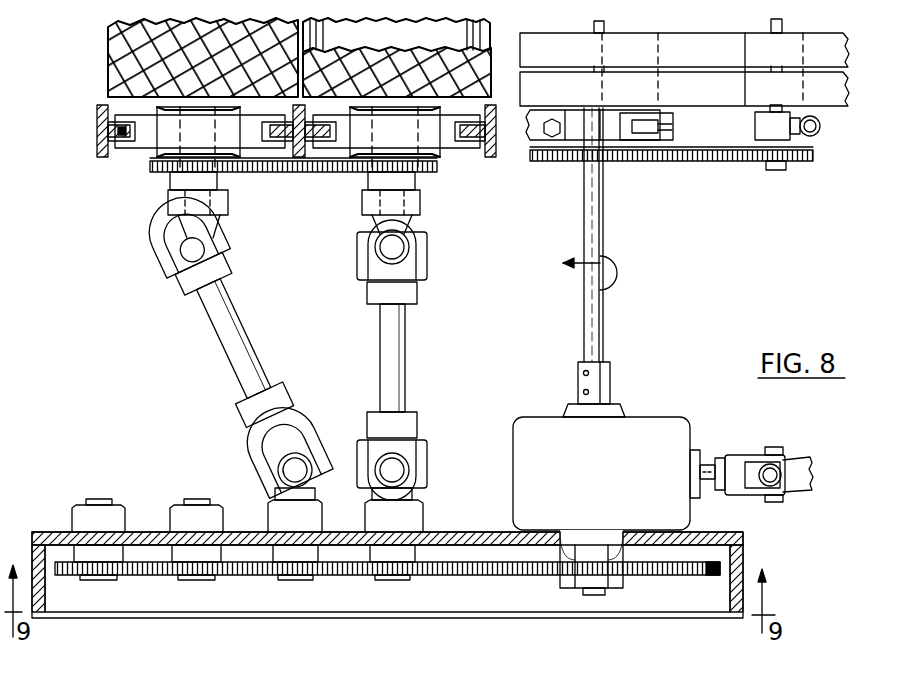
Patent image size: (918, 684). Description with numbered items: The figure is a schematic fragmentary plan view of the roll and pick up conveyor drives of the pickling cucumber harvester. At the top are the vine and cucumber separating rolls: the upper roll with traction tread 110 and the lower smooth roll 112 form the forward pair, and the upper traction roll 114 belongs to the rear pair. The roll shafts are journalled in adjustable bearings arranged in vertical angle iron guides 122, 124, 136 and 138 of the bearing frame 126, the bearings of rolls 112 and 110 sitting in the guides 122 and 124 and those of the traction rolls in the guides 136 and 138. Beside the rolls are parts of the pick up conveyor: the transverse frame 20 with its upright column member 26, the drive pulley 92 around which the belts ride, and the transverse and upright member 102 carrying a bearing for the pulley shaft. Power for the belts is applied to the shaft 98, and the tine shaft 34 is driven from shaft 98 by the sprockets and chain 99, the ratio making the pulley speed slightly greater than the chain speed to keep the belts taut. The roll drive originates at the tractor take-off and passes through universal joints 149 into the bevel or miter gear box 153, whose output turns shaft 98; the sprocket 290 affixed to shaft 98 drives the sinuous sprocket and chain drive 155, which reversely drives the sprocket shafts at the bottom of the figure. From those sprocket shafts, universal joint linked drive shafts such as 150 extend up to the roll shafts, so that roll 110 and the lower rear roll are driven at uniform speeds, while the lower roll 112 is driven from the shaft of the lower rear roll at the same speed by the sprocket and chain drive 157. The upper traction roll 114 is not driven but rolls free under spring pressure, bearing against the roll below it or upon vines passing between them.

The upper traction roll 114 is at (110, 74).
The lower smooth roll 112 is at (437, 32).
The upper roll with traction tread 110 is at (487, 75).
The angle iron guide 138 is at (122, 140).
The angle iron guide 136 is at (279, 141).
The angle iron guide 124 is at (304, 139).
The angle iron guide 122 is at (487, 157).
The bearing frame 126 is at (293, 163).
The sprocket and chain drive 157 is at (253, 175).
The universal joint linked drive shaft 150 is at (232, 345).
The drive pulley 92 is at (658, 87).
The transverse frame 20 is at (528, 136).
The transverse and upright member 102 is at (665, 142).
The upright column member 26 is at (822, 126).
The sprockets and chain 99 is at (718, 163).
The shaft 34 is at (772, 171).
The shaft 98 is at (590, 206).
The bevel or miter gear box 153 is at (660, 427).
The universal joint 149 is at (813, 487).
The sprocket 290 is at (620, 583).
The sprocket and chain drive 155 is at (511, 570).